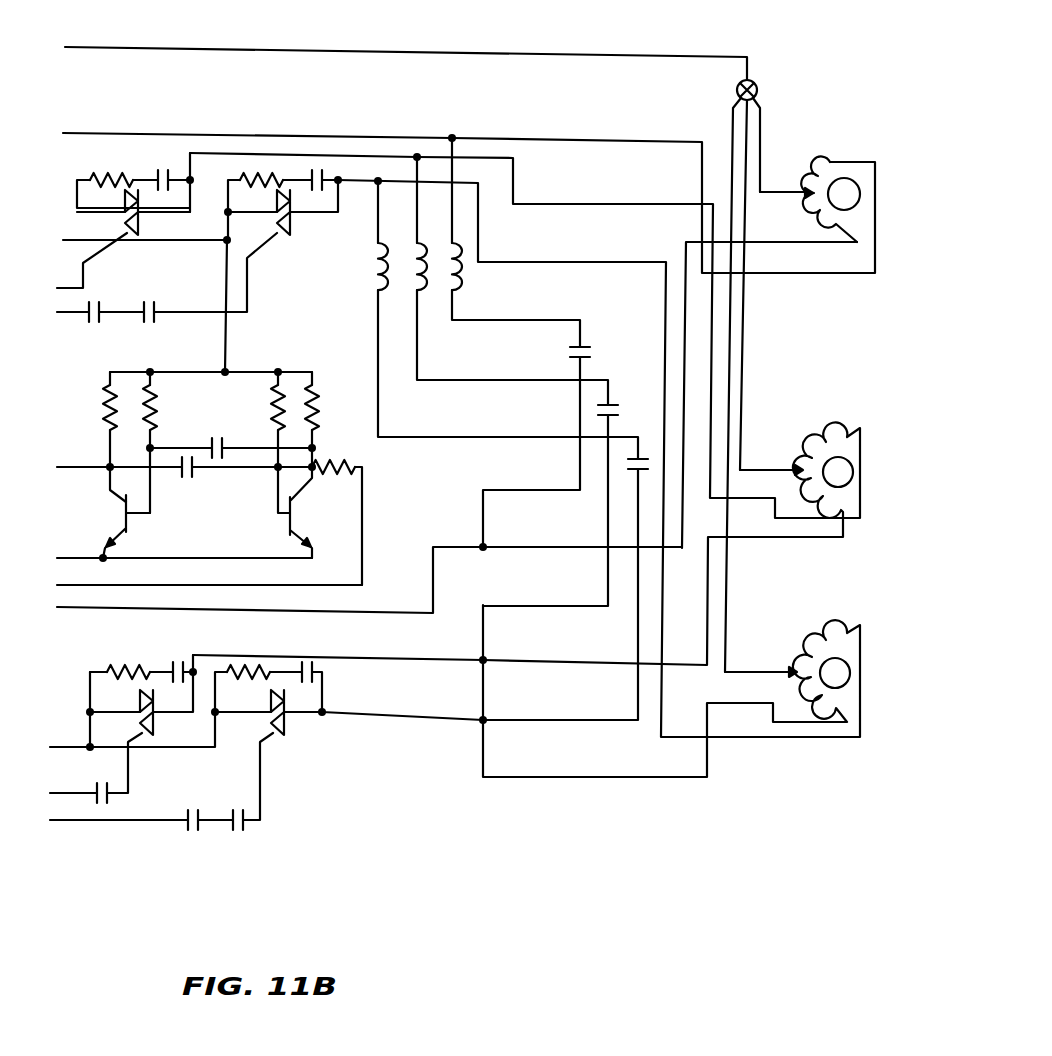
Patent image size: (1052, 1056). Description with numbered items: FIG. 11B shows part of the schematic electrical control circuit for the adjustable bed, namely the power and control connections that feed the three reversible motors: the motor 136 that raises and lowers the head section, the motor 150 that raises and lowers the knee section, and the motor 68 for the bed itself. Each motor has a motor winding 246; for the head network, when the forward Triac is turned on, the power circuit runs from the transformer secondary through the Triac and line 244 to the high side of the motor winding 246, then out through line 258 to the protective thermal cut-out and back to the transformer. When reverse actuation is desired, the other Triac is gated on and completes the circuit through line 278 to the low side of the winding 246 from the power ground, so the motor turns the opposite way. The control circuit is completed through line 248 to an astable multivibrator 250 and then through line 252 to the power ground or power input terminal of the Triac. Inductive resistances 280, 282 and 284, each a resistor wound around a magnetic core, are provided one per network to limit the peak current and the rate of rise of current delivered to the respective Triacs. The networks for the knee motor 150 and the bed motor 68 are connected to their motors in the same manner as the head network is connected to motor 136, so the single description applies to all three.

The line 258 is at (362, 54).
The line 244 is at (617, 139).
The motor winding 246 is at (840, 161).
The reversible motor 136 is at (851, 192).
The line 252 is at (157, 243).
The inductive resistance 284 is at (376, 272).
The inductive resistance 282 is at (428, 293).
The inductive resistance 280 is at (466, 294).
The line 278 is at (683, 330).
The astable multivibrator 250 is at (257, 380).
The line 248 is at (338, 597).
The reversible motor 150 is at (853, 472).
The motor 68 is at (851, 673).